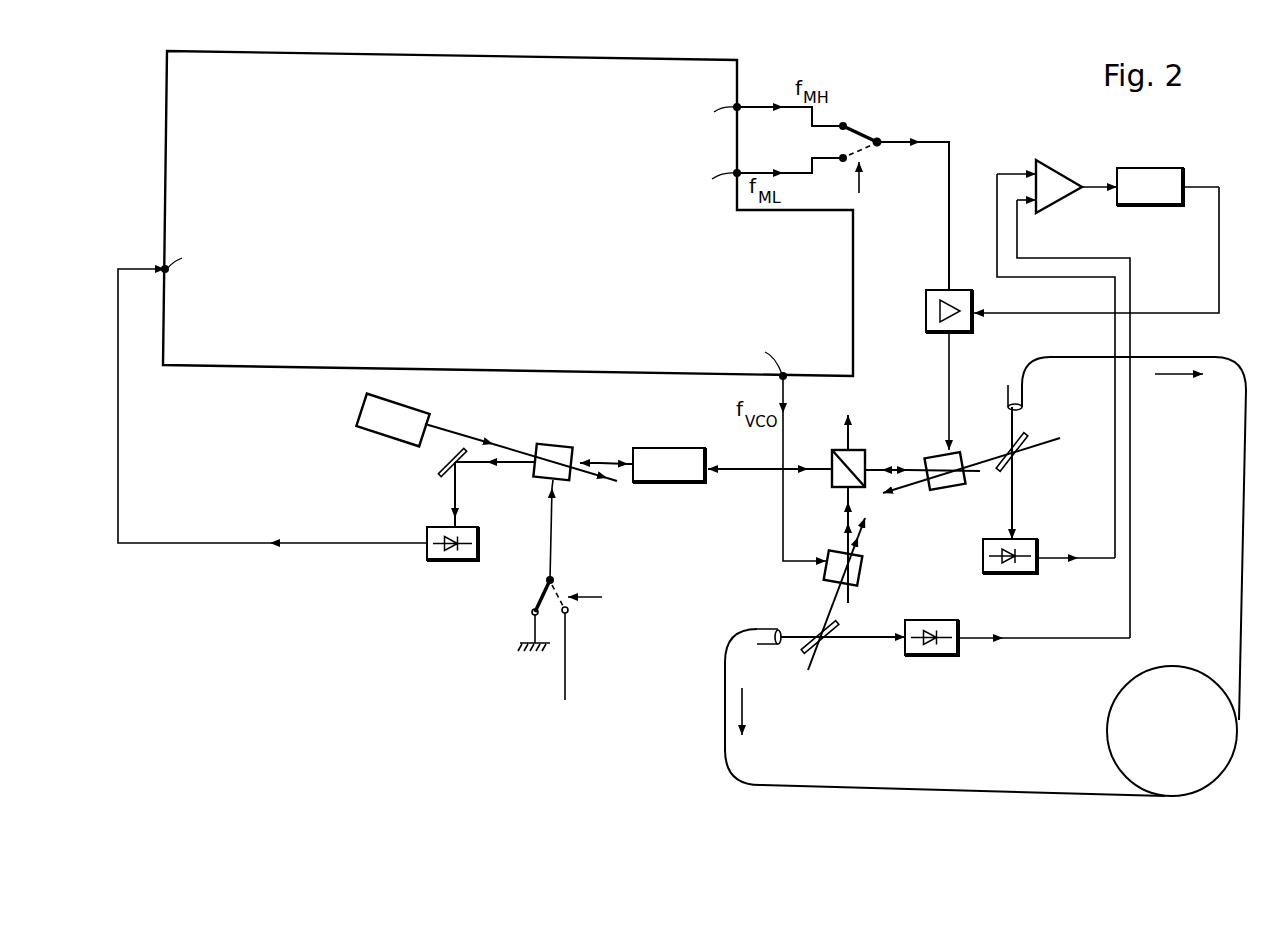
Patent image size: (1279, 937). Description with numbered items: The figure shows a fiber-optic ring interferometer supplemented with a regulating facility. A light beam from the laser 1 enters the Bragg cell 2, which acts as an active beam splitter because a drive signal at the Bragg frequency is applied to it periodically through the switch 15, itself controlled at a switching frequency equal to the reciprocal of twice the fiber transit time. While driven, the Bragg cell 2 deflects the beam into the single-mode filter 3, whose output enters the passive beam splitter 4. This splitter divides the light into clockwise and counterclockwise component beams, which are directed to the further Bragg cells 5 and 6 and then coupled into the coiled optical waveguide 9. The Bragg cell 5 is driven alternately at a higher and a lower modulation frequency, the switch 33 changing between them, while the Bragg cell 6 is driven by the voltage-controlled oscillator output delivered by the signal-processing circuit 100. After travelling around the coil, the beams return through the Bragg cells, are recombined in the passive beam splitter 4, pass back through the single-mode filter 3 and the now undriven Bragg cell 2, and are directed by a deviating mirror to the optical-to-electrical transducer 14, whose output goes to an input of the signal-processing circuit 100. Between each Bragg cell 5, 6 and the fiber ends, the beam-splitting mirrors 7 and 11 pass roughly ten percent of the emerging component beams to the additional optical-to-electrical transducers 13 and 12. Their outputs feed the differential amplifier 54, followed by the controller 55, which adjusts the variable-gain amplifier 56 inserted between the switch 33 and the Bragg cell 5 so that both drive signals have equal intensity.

The laser 1 is at (388, 440).
The Bragg cell 2 is at (553, 447).
The single-mode filter 3 is at (672, 448).
The passive beam splitter 4 is at (836, 450).
The Bragg cell 5 is at (930, 456).
The Bragg cell 6 is at (862, 572).
The beam-splitting mirror 7 is at (1030, 435).
The coiled optical waveguide 9 is at (1246, 435).
The beam-splitting mirror 11 is at (830, 645).
The optical-to-electrical transducer 12 is at (930, 657).
The optical-to-electrical transducer 13 is at (1012, 575).
The optical-to-electrical transducer 14 is at (452, 562).
The switch 15 is at (540, 597).
The switch 33 is at (861, 148).
The differential amplifier 54 is at (1048, 168).
The controller 55 is at (1145, 172).
The variable-gain amplifier 56 is at (937, 291).
The signal-processing circuit 100 is at (740, 74).